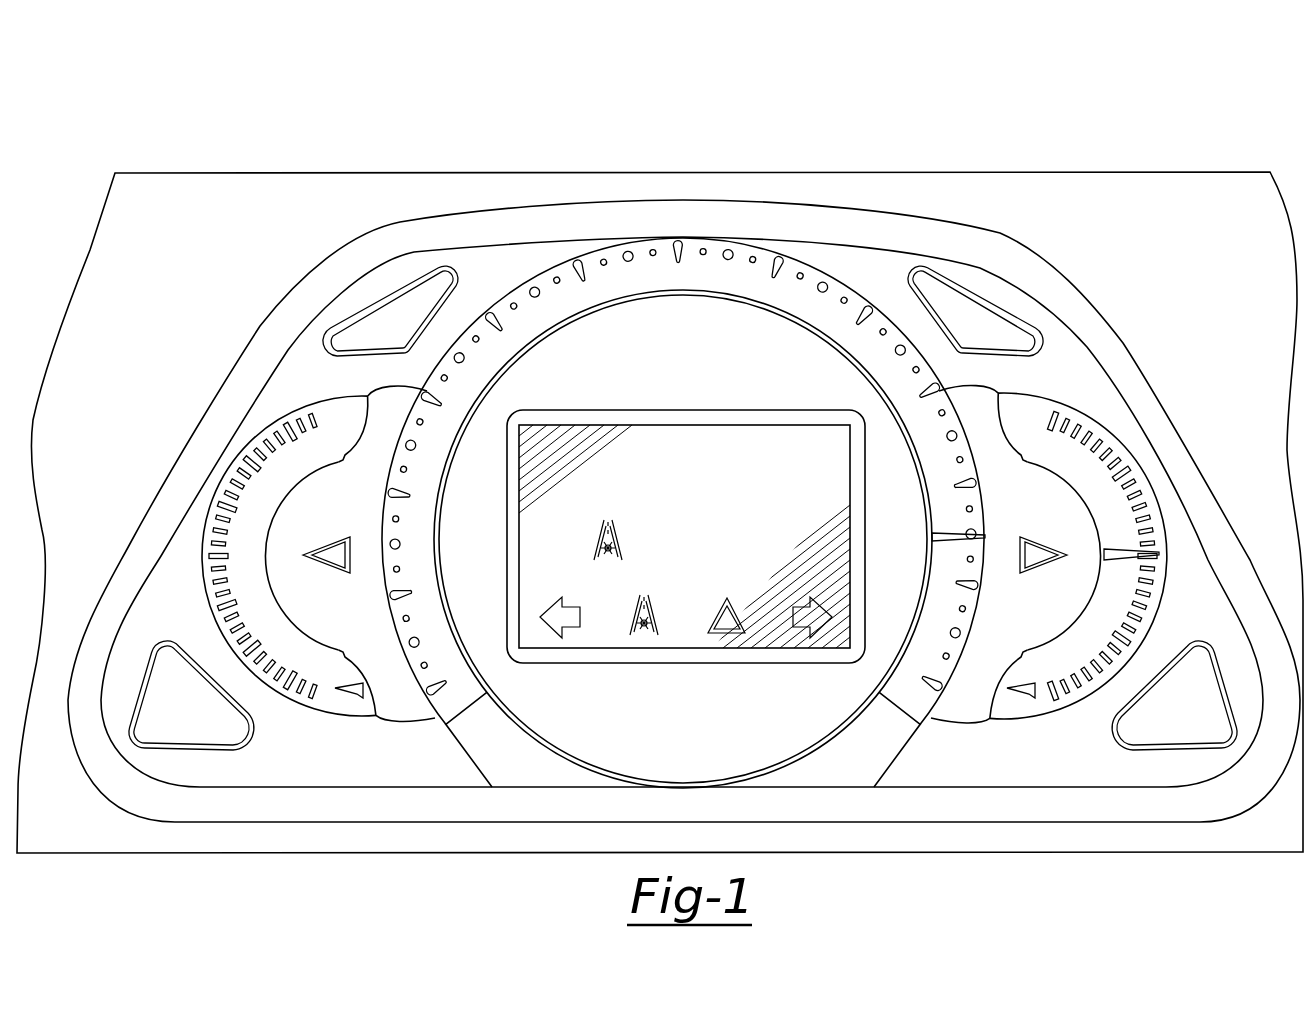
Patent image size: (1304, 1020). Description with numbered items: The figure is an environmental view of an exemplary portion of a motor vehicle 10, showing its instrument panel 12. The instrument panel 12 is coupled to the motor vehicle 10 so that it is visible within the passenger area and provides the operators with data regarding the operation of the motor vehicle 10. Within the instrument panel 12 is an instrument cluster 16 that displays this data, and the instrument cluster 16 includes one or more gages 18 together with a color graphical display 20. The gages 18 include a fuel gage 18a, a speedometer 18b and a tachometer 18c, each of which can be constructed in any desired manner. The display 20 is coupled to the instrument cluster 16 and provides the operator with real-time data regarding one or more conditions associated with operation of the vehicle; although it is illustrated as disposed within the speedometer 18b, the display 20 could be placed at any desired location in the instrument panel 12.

The motor vehicle 10 is at (1060, 88).
The instrument panel 12 is at (1167, 165).
The instrument cluster 16 is at (1065, 265).
The gages 18 is at (1086, 395).
The fuel gage 18a is at (1162, 510).
The speedometer 18b is at (938, 716).
The tachometer 18c is at (330, 714).
The color graphical display 20 is at (671, 668).